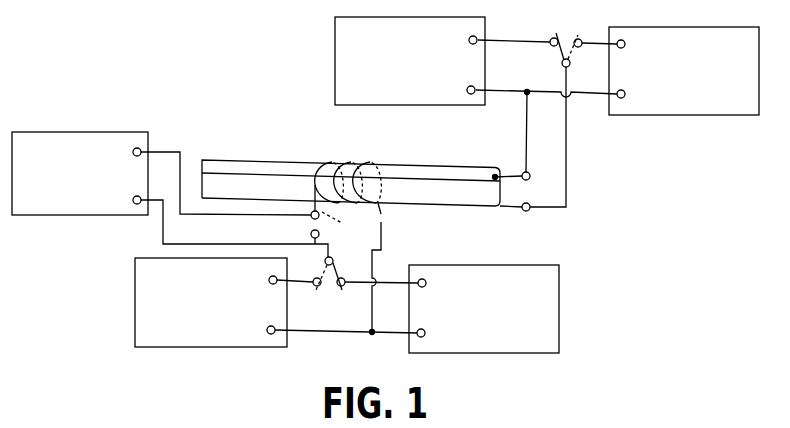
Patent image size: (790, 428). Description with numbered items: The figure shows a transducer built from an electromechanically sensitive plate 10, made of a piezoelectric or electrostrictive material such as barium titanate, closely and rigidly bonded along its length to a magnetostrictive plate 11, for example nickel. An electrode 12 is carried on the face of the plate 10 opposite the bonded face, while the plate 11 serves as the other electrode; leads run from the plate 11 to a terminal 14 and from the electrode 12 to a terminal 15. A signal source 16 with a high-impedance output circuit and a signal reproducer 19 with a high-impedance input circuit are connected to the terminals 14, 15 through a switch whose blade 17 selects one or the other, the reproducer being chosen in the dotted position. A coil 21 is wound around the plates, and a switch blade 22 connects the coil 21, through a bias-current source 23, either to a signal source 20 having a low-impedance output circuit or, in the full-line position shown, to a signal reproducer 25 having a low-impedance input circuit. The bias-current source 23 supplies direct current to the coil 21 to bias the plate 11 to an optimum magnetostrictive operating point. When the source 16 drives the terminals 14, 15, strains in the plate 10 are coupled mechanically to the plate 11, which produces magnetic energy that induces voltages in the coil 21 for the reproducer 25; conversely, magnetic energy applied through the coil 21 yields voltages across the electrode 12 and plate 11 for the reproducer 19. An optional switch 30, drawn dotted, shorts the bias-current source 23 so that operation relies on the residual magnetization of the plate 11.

The electromechanically sensitive plate 10 is at (493, 191).
The magnetostrictive plate 11 is at (464, 174).
The electrode 12 is at (466, 204).
The terminal 14 is at (529, 172).
The terminal 15 is at (529, 211).
The signal source 16 is at (335, 61).
The switch blade 17 is at (557, 49).
The signal reproducer 19 is at (669, 116).
The signal source 20 is at (215, 348).
The coil 21 is at (350, 162).
The switch blade 22 is at (338, 275).
The bias-current source 23 is at (76, 217).
The signal reproducer 25 is at (497, 354).
The switch 30 is at (337, 227).